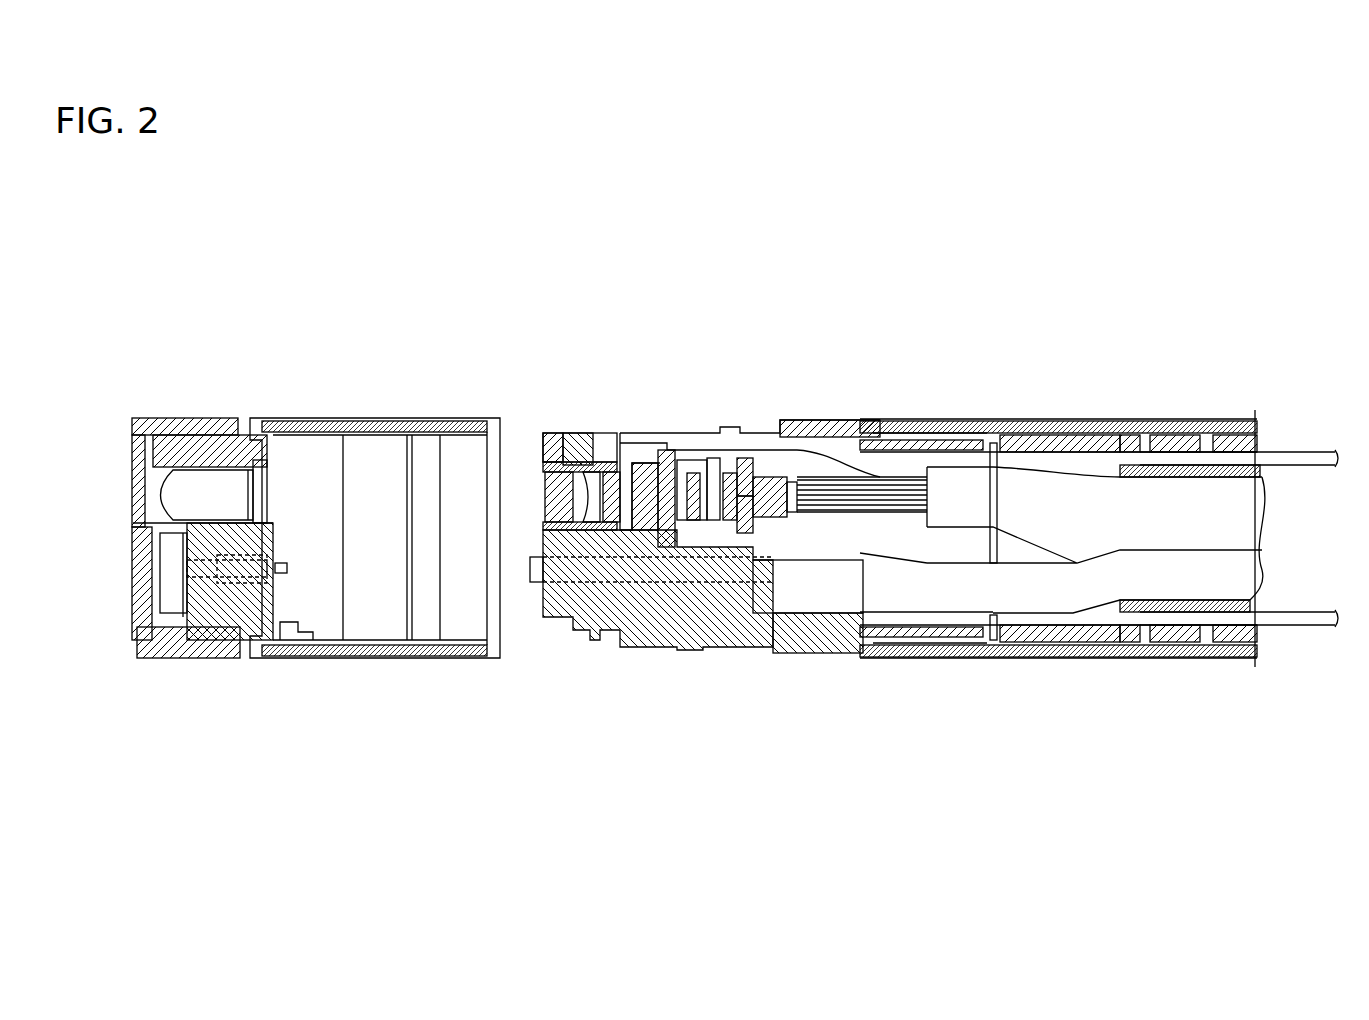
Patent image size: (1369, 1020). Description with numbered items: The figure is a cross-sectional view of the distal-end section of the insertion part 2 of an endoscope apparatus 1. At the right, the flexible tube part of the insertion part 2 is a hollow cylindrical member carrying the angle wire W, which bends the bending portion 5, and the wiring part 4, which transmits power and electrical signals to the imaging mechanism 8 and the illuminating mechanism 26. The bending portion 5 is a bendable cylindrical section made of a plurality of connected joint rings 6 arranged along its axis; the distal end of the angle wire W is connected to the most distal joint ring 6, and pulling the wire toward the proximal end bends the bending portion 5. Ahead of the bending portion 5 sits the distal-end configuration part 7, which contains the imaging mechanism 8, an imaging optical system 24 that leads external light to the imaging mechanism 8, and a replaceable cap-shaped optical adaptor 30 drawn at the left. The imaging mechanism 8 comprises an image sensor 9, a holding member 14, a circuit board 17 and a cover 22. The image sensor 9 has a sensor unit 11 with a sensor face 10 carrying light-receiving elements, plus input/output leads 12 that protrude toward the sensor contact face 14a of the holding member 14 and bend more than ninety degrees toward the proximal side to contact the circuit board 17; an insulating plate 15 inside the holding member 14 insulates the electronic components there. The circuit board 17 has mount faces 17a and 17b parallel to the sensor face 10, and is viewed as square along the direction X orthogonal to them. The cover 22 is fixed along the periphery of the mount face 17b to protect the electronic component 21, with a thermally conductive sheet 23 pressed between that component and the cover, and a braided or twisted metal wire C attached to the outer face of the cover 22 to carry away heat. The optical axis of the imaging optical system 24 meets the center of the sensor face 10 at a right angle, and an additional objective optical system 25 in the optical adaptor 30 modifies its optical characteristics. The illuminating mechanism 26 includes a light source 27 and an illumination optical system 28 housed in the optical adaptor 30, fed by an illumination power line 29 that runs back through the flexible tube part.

The endoscope / connector assembly 1 is at (1233, 243).
The insertion part 2 is at (1155, 343).
The wiring part 4 is at (855, 447).
The bending portion 5 is at (1213, 676).
The joint rings 6 is at (1130, 438).
The distal-end configuration part 7 is at (1026, 366).
The imaging mechanism 8 is at (721, 442).
The image sensor 9 is at (608, 436).
The sensor face 10 is at (650, 497).
The sensor unit 11 is at (673, 493).
The input/output leads 12 is at (663, 452).
The holding member 14 is at (705, 528).
The sensor contact face 14a is at (677, 497).
The insulating plate 15 is at (690, 478).
The circuit board 17 is at (750, 462).
The mount face 17a is at (735, 470).
The mount face 17b is at (760, 500).
The electronic component 21 is at (757, 497).
The cover 22 is at (781, 514).
The thermally conductive sheet 23 is at (771, 514).
The imaging optical system 24 is at (587, 540).
The additional objective optical system 25 is at (213, 478).
The illuminating mechanism 26 is at (165, 567).
The light source 27 is at (165, 573).
The illumination optical system 28 is at (143, 607).
The illumination power line 29 is at (283, 574).
The optical adaptor 30 is at (376, 405).
The metal wire C is at (828, 498).
The angle wire W is at (1307, 452).
The direction X is at (972, 405).